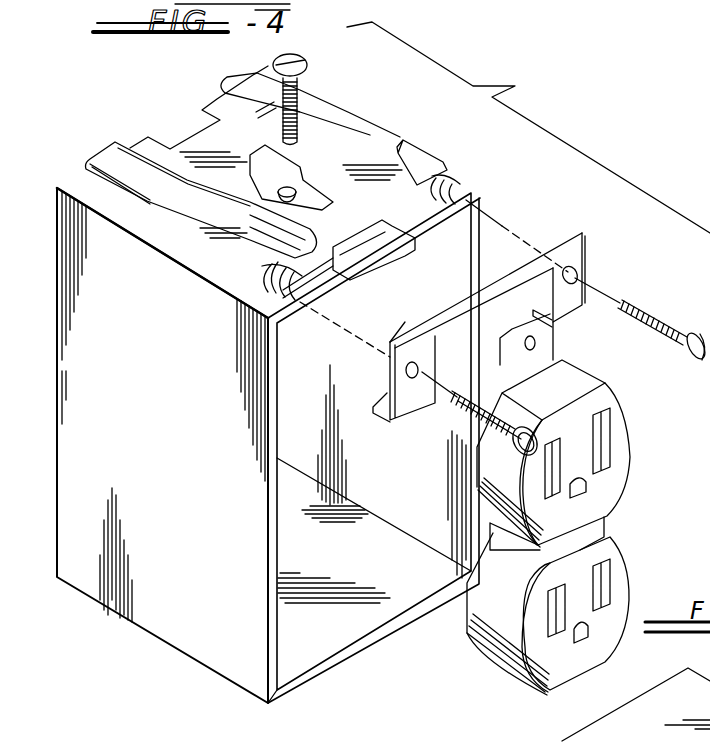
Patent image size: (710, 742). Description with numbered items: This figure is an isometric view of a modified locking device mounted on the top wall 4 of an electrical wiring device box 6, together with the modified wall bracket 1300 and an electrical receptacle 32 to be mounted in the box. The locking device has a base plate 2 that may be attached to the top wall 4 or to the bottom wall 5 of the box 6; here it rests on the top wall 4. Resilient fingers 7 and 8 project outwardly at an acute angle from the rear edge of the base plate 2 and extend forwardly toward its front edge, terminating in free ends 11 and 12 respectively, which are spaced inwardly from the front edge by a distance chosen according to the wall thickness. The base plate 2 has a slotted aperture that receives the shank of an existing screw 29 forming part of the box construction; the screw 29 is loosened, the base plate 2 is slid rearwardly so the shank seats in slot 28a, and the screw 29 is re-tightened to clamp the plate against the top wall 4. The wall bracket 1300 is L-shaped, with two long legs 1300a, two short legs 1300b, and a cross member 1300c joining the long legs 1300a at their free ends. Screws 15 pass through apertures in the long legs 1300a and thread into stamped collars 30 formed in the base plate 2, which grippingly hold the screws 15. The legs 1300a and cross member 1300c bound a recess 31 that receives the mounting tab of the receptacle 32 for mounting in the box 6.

The base plate 2 is at (397, 187).
The top wall 4 is at (112, 187).
The bottom wall 5 is at (97, 604).
The electrical wiring device box 6 is at (93, 450).
The resilient finger 7 is at (375, 115).
The resilient finger 8 is at (215, 200).
The free end 11 is at (443, 165).
The free end 12 is at (253, 262).
The adjusting and securing screw 15 is at (645, 308).
The slot 28a is at (273, 173).
The existing screw 29 is at (342, 192).
The stamped collar 30 is at (455, 177).
The recess 31 is at (475, 297).
The receptacle 32 is at (605, 477).
The wall bracket 1300 is at (389, 362).
The long leg 1300a is at (573, 250).
The short leg 1300b is at (545, 318).
The cross member 1300c is at (405, 322).